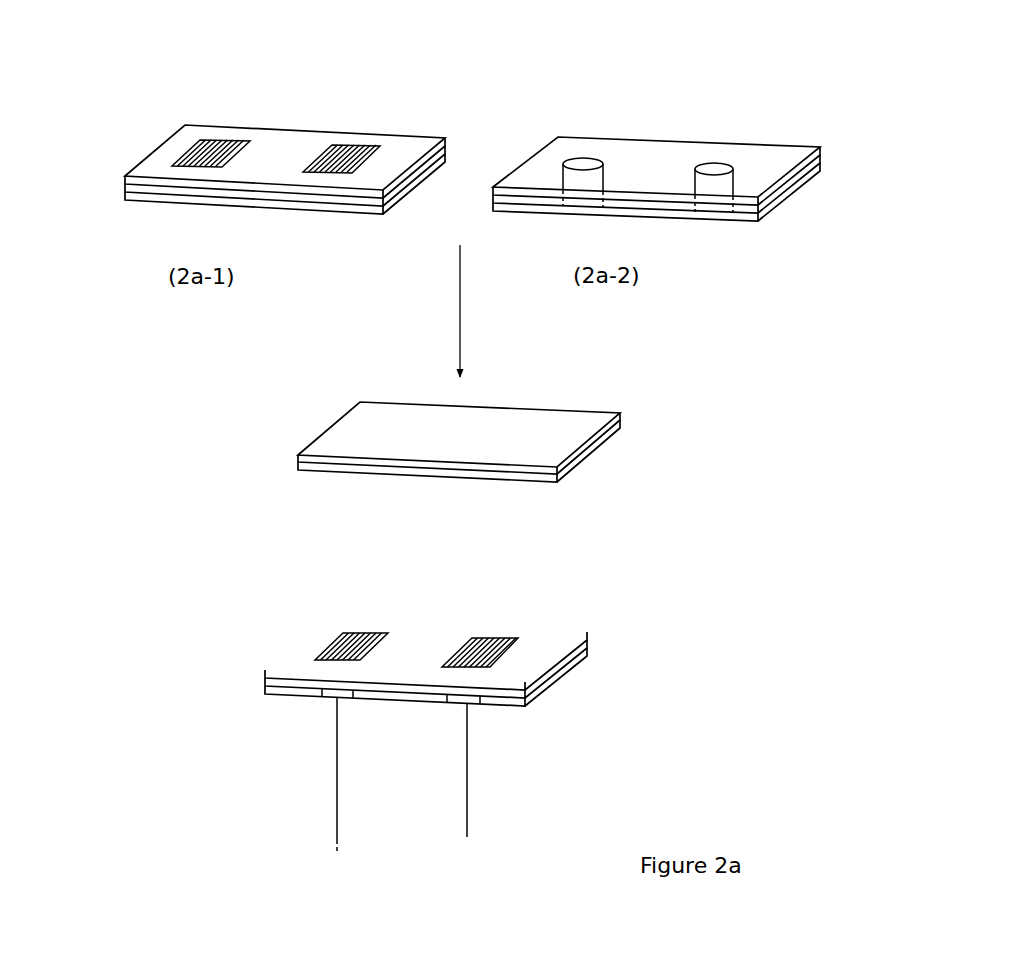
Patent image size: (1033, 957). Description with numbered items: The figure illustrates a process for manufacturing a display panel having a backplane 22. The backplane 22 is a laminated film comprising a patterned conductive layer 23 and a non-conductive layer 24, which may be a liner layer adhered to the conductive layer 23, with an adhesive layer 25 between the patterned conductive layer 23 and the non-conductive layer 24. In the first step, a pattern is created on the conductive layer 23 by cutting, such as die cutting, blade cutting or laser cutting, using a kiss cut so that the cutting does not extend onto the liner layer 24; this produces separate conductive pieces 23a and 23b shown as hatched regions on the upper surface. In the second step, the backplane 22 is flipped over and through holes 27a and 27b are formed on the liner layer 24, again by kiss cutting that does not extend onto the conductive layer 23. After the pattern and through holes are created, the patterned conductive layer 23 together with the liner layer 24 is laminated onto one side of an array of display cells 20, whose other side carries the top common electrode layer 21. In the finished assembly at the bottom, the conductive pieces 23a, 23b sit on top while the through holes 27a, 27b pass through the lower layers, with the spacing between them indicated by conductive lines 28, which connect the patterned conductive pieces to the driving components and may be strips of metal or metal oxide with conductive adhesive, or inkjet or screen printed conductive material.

The array of display cells 20 is at (290, 467).
The top common electrode layer 21 is at (290, 453).
The backplane 22 is at (133, 67).
The patterned conductive layer 23 is at (123, 177).
The conductive piece 23a is at (200, 150).
The conductive piece 23b is at (347, 155).
The non-conductive layer 24 is at (123, 200).
The adhesive layer 25 is at (123, 190).
The through hole 27a is at (592, 160).
The through hole 27b is at (722, 167).
The conductive lines 28 is at (466, 812).